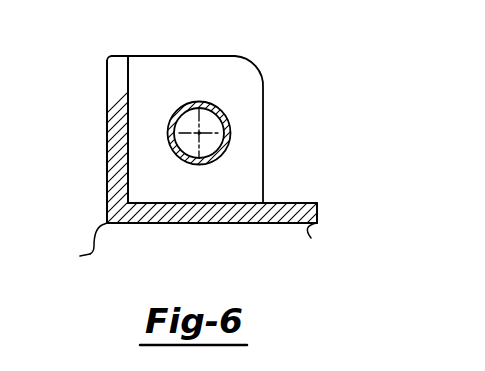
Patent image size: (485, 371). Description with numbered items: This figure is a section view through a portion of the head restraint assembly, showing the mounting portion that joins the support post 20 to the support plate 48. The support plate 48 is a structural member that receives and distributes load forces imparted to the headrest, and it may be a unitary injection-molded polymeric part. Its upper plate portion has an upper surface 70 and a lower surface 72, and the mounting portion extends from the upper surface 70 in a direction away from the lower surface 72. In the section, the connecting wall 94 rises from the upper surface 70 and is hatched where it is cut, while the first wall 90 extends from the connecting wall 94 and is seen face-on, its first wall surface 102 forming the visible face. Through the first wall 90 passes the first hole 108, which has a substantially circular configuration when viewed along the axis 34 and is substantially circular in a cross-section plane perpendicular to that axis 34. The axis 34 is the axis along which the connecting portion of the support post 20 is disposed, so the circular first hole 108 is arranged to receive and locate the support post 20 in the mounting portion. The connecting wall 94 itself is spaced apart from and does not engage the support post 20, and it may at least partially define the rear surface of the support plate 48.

The first wall 90 is at (254, 68).
The connecting wall 94 is at (107, 148).
The first wall surface 102 is at (186, 65).
The first hole 108 is at (207, 105).
The support post 20 is at (223, 107).
The axis 34 is at (199, 133).
The upper surface 70 is at (290, 203).
The lower surface 72 is at (182, 225).
The support plate 48 is at (90, 254).